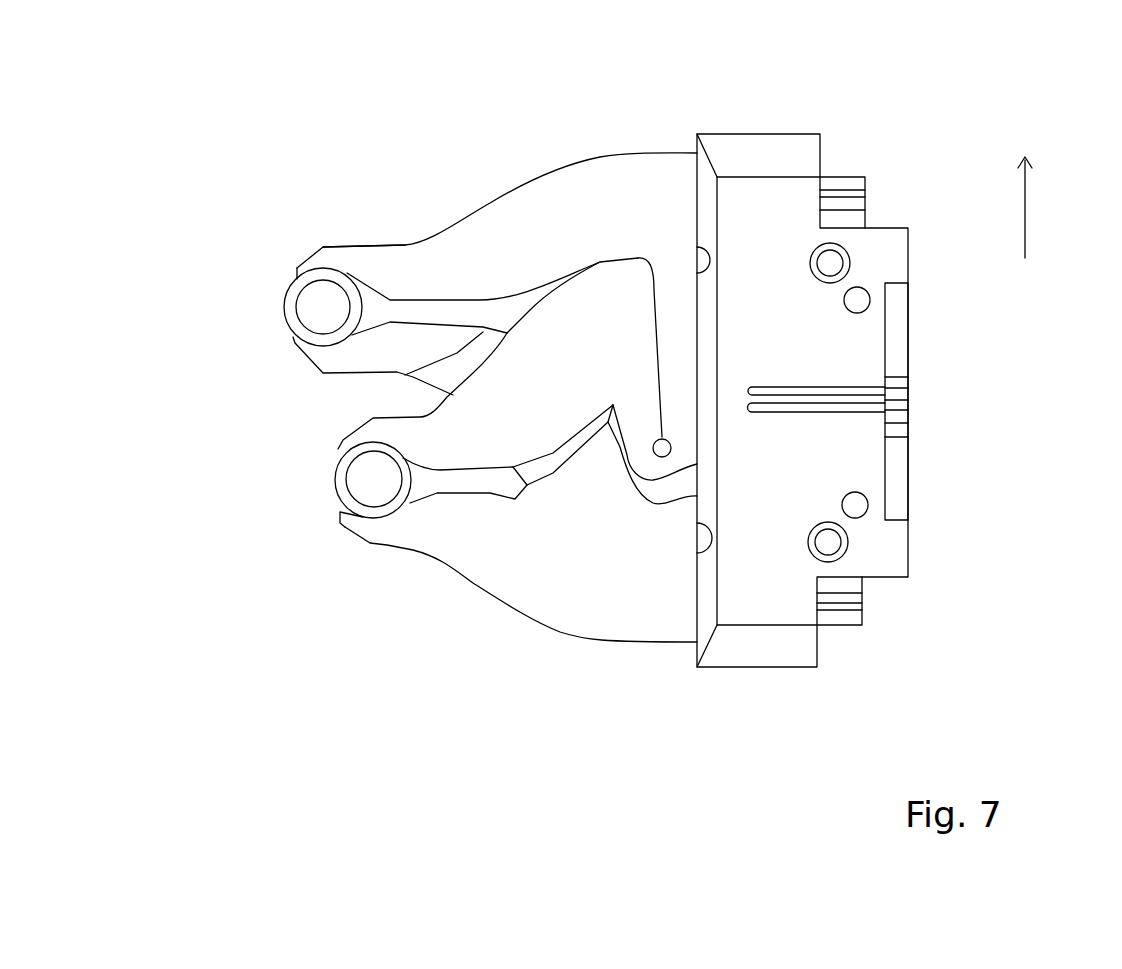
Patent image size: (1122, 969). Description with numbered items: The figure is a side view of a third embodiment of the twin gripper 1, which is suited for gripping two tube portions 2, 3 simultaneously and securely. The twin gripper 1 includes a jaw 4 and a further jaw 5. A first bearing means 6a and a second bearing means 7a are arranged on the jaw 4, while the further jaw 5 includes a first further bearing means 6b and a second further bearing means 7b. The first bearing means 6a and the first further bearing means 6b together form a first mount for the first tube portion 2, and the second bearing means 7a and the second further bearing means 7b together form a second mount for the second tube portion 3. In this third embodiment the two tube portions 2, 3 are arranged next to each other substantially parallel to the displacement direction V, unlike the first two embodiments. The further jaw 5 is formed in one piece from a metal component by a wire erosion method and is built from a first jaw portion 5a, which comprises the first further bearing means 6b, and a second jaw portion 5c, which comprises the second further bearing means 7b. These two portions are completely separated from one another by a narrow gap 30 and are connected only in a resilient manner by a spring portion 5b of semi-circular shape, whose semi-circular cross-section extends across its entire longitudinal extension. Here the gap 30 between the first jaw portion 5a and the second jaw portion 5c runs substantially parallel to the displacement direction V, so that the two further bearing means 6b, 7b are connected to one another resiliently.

The twin gripper 1 is at (262, 147).
The first tube portion 2 is at (284, 309).
The second tube portion 3 is at (345, 497).
The jaw 4 is at (633, 620).
The further jaw 5 is at (643, 165).
The first jaw portion 5a is at (408, 262).
The spring portion 5b is at (665, 467).
The second jaw portion 5c is at (548, 413).
The first bearing means 6a is at (295, 343).
The first further bearing means 6b is at (297, 270).
The second bearing means 7a is at (372, 520).
The second further bearing means 7b is at (353, 445).
The gap 30 is at (655, 305).